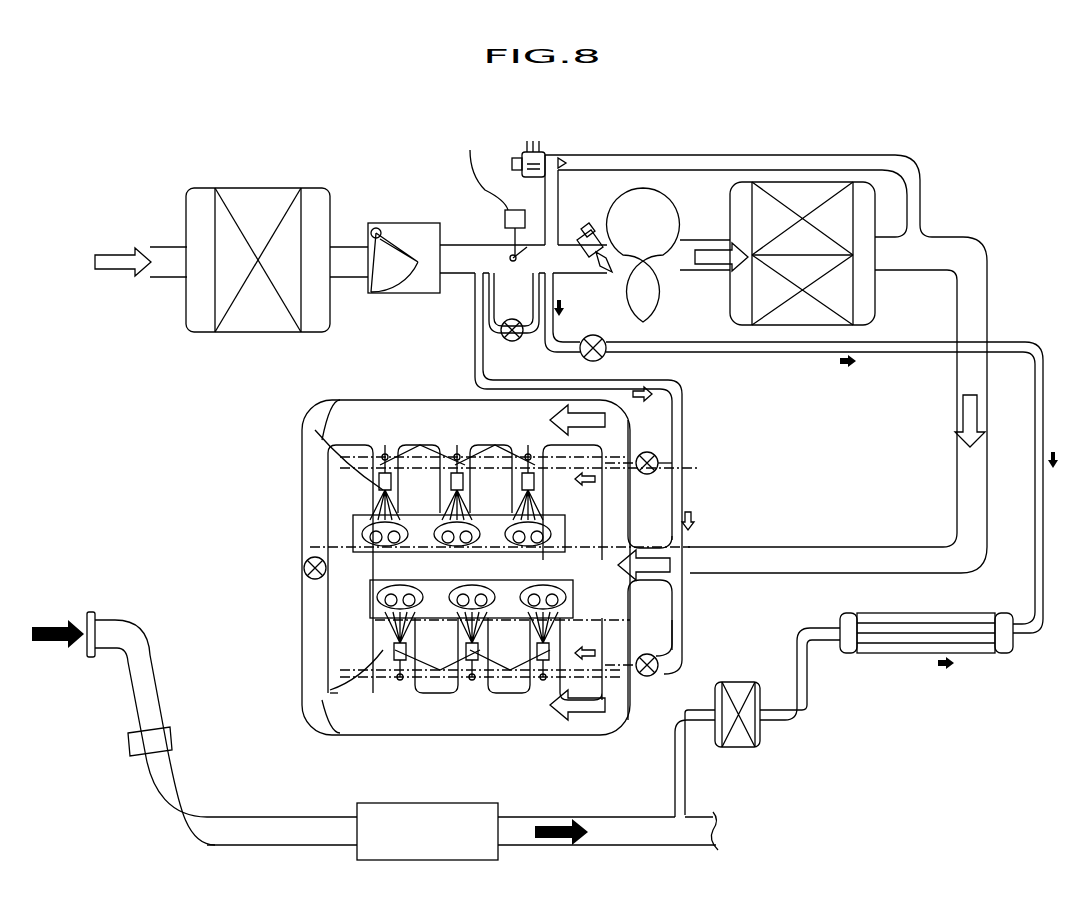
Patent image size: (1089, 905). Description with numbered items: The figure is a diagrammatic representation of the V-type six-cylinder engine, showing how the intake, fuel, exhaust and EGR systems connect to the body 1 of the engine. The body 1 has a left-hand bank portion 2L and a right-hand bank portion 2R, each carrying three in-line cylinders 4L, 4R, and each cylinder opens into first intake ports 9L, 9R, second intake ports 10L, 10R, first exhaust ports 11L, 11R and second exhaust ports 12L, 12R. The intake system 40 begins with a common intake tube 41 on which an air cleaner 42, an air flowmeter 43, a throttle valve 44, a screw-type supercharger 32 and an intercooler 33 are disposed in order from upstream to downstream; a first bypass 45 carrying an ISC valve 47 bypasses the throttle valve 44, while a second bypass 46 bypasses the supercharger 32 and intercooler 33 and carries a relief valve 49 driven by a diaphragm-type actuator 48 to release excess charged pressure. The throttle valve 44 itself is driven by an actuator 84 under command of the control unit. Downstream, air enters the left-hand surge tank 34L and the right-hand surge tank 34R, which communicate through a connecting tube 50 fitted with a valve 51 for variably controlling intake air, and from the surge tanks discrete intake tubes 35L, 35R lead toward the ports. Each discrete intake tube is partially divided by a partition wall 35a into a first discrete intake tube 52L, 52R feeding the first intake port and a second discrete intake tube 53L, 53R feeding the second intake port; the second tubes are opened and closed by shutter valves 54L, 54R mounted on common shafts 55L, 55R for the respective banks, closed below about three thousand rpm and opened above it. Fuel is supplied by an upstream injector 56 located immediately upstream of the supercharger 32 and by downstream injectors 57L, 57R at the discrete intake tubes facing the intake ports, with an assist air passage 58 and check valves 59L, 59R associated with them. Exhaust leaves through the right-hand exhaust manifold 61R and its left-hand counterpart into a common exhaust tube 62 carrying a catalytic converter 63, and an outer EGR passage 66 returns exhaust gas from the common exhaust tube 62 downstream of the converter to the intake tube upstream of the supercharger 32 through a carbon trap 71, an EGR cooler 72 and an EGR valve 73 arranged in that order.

The body of the engine 1 is at (368, 580).
The right-hand bank portion 2R is at (645, 500).
The left-hand bank portion 2L is at (630, 578).
The cylinder 4R is at (372, 545).
The cylinder 4L is at (376, 598).
The first intake port 9R is at (396, 508).
The first intake port 9L is at (462, 605).
The second intake port 10R is at (376, 520).
The second intake port 10L is at (388, 622).
The first exhaust port 11R is at (396, 545).
The first exhaust port 11L is at (628, 598).
The second exhaust port 12R is at (340, 530).
The second exhaust port 12L is at (545, 583).
The supercharger 32 is at (670, 215).
The intercooler 33 is at (856, 300).
The right-hand surge tank 34R is at (396, 400).
The left-hand surge tank 34L is at (394, 728).
The discrete intake tube 35R is at (360, 482).
The discrete intake tube 35L is at (330, 655).
The partition wall 35a is at (460, 452).
The intake system 40 is at (935, 440).
The common intake tube 41 is at (446, 243).
The air cleaner 42 is at (262, 196).
The air flowmeter 43 is at (378, 228).
The throttle valve 44 is at (503, 265).
The first bypass 45 is at (494, 308).
The second bypass 46 is at (680, 155).
The ISC valve 47 is at (525, 340).
The actuator 48 is at (525, 152).
The relief valve 49 is at (565, 162).
The connecting tube 50 is at (303, 510).
The valve 51 is at (303, 568).
The first discrete intake tube 52R is at (395, 445).
The first discrete intake tube 52L is at (412, 700).
The second discrete intake tube 53R is at (315, 430).
The second discrete intake tube 53L is at (330, 690).
The shutter valve 54R is at (370, 447).
The shutter valve 54L is at (372, 690).
The common shaft 55R is at (565, 455).
The common shaft 55L is at (622, 616).
The upstream injector 56 is at (590, 228).
The downstream injector 57R is at (380, 473).
The downstream injector 57L is at (395, 678).
The assist air passage 58 is at (684, 425).
The check valve 59R is at (647, 452).
The check valve 59L is at (658, 668).
The right-hand exhaust manifold 61R is at (125, 668).
The common exhaust tube 62 is at (327, 847).
The catalytic converter 63 is at (445, 858).
The outer EGR passage 66 is at (810, 710).
The carbon trap 71 is at (748, 748).
The EGR cooler 72 is at (912, 656).
The EGR valve 73 is at (604, 345).
The actuator 84 is at (483, 167).